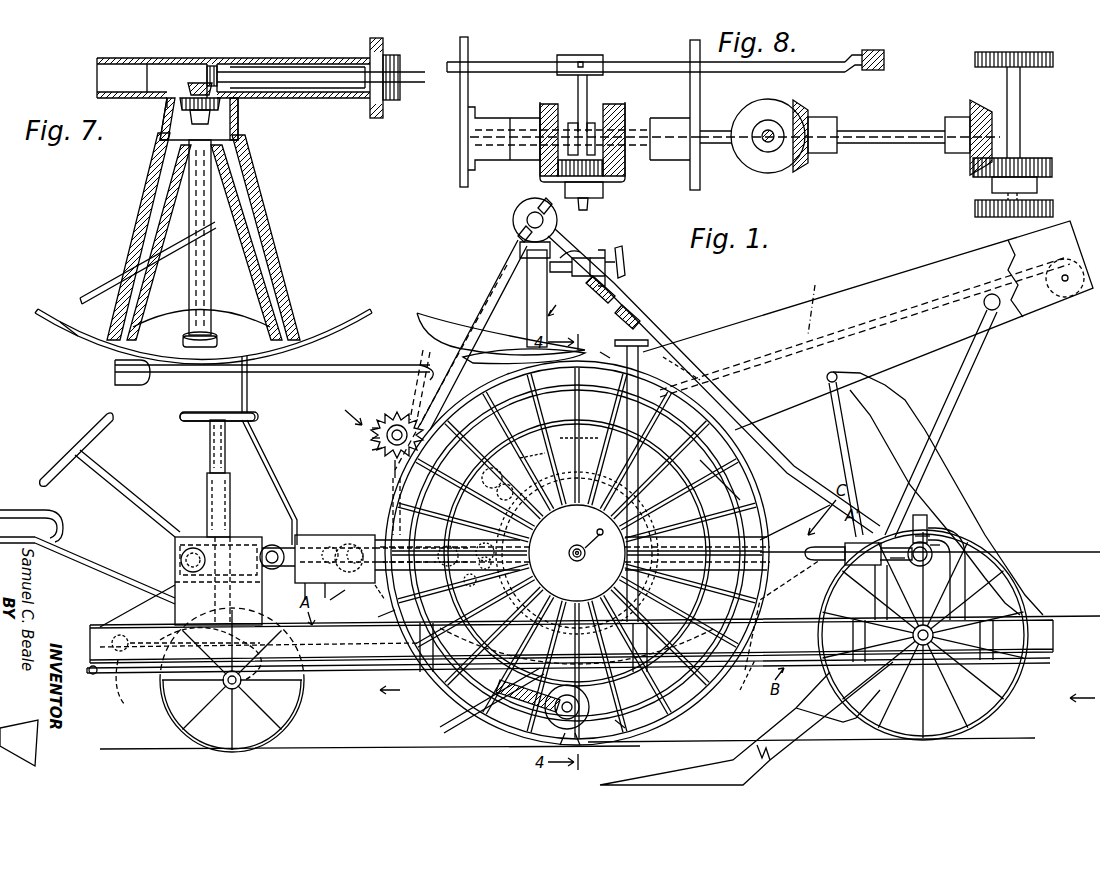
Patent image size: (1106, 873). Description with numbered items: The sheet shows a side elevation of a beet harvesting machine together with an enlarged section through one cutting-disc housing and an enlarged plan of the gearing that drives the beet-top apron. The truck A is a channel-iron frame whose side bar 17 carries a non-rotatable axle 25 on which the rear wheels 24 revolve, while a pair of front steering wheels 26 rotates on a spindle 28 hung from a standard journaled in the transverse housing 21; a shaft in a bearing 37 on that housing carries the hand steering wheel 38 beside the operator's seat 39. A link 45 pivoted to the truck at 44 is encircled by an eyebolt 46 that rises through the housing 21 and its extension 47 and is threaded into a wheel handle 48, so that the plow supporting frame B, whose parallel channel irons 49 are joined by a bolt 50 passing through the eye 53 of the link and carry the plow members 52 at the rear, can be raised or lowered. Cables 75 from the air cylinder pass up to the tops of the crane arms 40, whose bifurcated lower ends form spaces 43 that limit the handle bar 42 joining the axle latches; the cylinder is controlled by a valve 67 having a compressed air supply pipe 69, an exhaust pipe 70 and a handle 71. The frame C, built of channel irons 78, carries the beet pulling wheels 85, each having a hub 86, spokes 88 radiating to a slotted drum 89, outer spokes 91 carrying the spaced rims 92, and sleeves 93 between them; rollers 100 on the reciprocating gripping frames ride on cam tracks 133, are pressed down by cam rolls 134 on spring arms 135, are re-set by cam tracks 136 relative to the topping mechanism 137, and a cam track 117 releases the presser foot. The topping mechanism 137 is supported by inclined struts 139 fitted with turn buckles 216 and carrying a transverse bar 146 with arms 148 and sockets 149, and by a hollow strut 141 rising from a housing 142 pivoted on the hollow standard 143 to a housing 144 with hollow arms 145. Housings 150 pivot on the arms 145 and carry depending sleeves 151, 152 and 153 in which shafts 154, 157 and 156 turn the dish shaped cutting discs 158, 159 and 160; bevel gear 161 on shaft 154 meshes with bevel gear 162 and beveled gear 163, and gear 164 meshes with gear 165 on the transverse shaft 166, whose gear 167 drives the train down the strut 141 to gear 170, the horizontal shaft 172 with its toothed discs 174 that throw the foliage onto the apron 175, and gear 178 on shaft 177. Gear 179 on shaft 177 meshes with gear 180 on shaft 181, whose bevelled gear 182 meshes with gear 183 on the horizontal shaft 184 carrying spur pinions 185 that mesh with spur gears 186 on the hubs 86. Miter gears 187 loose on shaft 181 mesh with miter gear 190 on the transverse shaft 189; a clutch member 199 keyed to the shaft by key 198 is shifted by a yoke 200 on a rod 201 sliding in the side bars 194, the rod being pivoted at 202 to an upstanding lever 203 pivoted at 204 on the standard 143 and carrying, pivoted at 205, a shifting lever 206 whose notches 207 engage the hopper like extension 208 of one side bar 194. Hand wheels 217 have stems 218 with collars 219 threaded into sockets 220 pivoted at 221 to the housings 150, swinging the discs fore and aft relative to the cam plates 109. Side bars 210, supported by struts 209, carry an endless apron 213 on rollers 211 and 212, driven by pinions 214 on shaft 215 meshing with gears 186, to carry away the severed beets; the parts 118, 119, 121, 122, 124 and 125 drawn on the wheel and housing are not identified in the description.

In FIG. 7, the tube 148 is at (125, 49).
In FIG. 1, the tube 148 is at (517, 232).
In FIG. 7, the housing 150 is at (196, 58).
In FIG. 7, the sleeve 149 is at (290, 49).
In FIG. 7, the gear 165 is at (218, 66).
In FIG. 7, the shaft 145 is at (330, 84).
In FIG. 7, the bore 166 is at (312, 84).
In FIG. 7, the flange 144 is at (378, 118).
In FIG. 1, the flange 144 is at (513, 216).
In FIG. 7, the gear 167 is at (401, 73).
In FIG. 7, the bevel gear 164 is at (188, 86).
In FIG. 7, the gear 162 is at (222, 104).
In FIG. 7, the gear 163 is at (222, 118).
In FIG. 7, the head 161 is at (167, 104).
In FIG. 7, the leg 151 is at (135, 232).
In FIG. 1, the leg 151 is at (527, 306).
In FIG. 7, the rod 156 is at (192, 298).
In FIG. 7, the column 153 is at (207, 262).
In FIG. 1, the column 153 is at (487, 295).
In FIG. 7, the leg 152 is at (262, 230).
In FIG. 7, the leg 157 is at (278, 276).
In FIG. 7, the brace 154 is at (130, 272).
In FIG. 7, the base 159 is at (345, 322).
In FIG. 7, the base end 158 is at (72, 317).
In FIG. 1, the base end 158 is at (512, 350).
In FIG. 7, the dome 160 is at (160, 326).
In FIG. 1, the dome 160 is at (447, 340).
In FIG. 8, the rod 201 is at (636, 62).
In FIG. 8, the hook 203 is at (845, 62).
In FIG. 1, the hook 203 is at (482, 476).
In FIG. 8, the nut 202 is at (888, 51).
In FIG. 1, the nut 202 is at (385, 622).
In FIG. 8, the bearing plate 194 is at (460, 112).
In FIG. 1, the bearing plate 194 is at (272, 545).
In FIG. 8, the shaft 198 is at (540, 152).
In FIG. 8, the gear casing 187 is at (540, 104).
In FIG. 1, the gear casing 187 is at (318, 530).
In FIG. 8, the shifter 200 is at (589, 98).
In FIG. 8, the clutch 199 is at (592, 122).
In FIG. 8, the bracket 190 is at (603, 190).
In FIG. 1, the bracket 190 is at (322, 592).
In FIG. 8, the lug 189 is at (588, 205).
In FIG. 1, the lug 189 is at (305, 588).
In FIG. 8, the shaft 181 is at (722, 148).
In FIG. 1, the shaft 181 is at (340, 578).
In FIG. 8, the pulley 179 is at (772, 173).
In FIG. 1, the pulley 179 is at (348, 595).
In FIG. 8, the hub 177 is at (770, 132).
In FIG. 1, the hub 177 is at (392, 500).
In FIG. 8, the bevel gear 180 is at (810, 165).
In FIG. 1, the bevel gear 180 is at (386, 598).
In FIG. 8, the bevel gear 182 is at (978, 94).
In FIG. 1, the bevel gear 182 is at (450, 566).
In FIG. 8, the shaft 184 is at (1021, 130).
In FIG. 1, the shaft 184 is at (493, 550).
In FIG. 8, the bevel gear 183 is at (1035, 160).
In FIG. 8, the gear 185 is at (1053, 58).
In FIG. 1, the gear 185 is at (491, 562).
In FIG. 1, the frame 17 is at (340, 652).
In FIG. 1, the rail 53 is at (300, 634).
In FIG. 1, the post 69 is at (420, 648).
In FIG. 1, the wheel 26 is at (306, 712).
In FIG. 1, the hub 28 is at (222, 680).
In FIG. 1, the link 44 is at (115, 670).
In FIG. 1, the link 45 is at (200, 660).
In FIG. 1, the link 50 is at (210, 641).
In FIG. 1, the gear box 21 is at (168, 563).
In FIG. 1, the post 47 is at (230, 488).
In FIG. 1, the handle 48 is at (195, 422).
In FIG. 1, the lever 38 is at (86, 436).
In FIG. 1, the rod 37 is at (140, 486).
In FIG. 1, the handle 39 is at (8, 510).
In FIG. 1, the brace 46 is at (175, 604).
In FIG. 1, the rod 206 is at (330, 360).
In FIG. 1, the connection 205 is at (420, 365).
In FIG. 1, the rod 207 is at (262, 392).
In FIG. 1, the handle 208 is at (258, 416).
In FIG. 1, the sprocket 170 is at (397, 412).
In FIG. 1, the arrow 142 is at (350, 420).
In FIG. 1, the tooth 174 is at (372, 430).
In FIG. 1, the tooth 172 is at (372, 440).
In FIG. 1, the tooth 178 is at (372, 452).
In FIG. 1, the shaft 143 is at (392, 478).
In FIG. 1, the gear 175 is at (345, 543).
In FIG. 1, the axle housing 118 is at (560, 578).
In FIG. 1, the gear 121 is at (470, 587).
In FIG. 1, the wheel rim 100 is at (478, 392).
In FIG. 1, the ring 186 is at (688, 503).
In FIG. 1, the spokes 117 is at (480, 524).
In FIG. 1, the ring 89 is at (676, 578).
In FIG. 1, the hub disc 119 is at (563, 505).
In FIG. 1, the axle 124 is at (586, 552).
In FIG. 1, the pin 86 is at (597, 531).
In FIG. 1, the ring gear 88 is at (577, 553).
In FIG. 1, the gear 204 is at (497, 492).
In FIG. 1, the shaft 214 is at (587, 436).
In FIG. 1, the gear 215 is at (540, 452).
In FIG. 1, the arc 122 is at (686, 640).
In FIG. 1, the post 125 is at (620, 341).
In FIG. 1, the pin 211 is at (604, 352).
In FIG. 1, the coupling 219 is at (575, 240).
In FIG. 1, the leg 221 is at (512, 248).
In FIG. 1, the coupling 220 is at (558, 274).
In FIG. 1, the coupling 218 is at (599, 262).
In FIG. 1, the lever 217 is at (622, 248).
In FIG. 1, the bar 139 is at (660, 330).
In FIG. 1, the joint 216 is at (626, 306).
In FIG. 1, the joint 146 is at (612, 312).
In FIG. 1, the arrow 137 is at (568, 300).
In FIG. 1, the bar 136 is at (667, 373).
In FIG. 1, the rod 141 is at (438, 348).
In FIG. 1, the boom 210 is at (878, 286).
In FIG. 1, the rod 213 is at (865, 327).
In FIG. 1, the pulley 212 is at (1065, 296).
In FIG. 1, the hood 75 is at (855, 480).
In FIG. 1, the lever 209 is at (955, 385).
In FIG. 1, the tie rod 71 is at (806, 553).
In FIG. 1, the block 78 is at (785, 540).
In FIG. 1, the ring 67 is at (928, 530).
In FIG. 1, the elbow 70 is at (966, 596).
In FIG. 1, the bar 109 is at (795, 514).
In FIG. 1, the link 93 is at (611, 748).
In FIG. 1, the bar 85 is at (777, 462).
In FIG. 1, the lever 42 is at (918, 535).
In FIG. 1, the lever 43 is at (932, 545).
In FIG. 1, the rod 40 is at (905, 560).
In FIG. 1, the wheel 24 is at (1018, 690).
In FIG. 1, the hub 25 is at (948, 660).
In FIG. 1, the roller 135 is at (540, 722).
In FIG. 1, the lever 133 is at (430, 696).
In FIG. 1, the bracket 134 is at (528, 727).
In FIG. 1, the link 91 is at (510, 733).
In FIG. 1, the link 92 is at (630, 726).
In FIG. 1, the link 49 is at (749, 678).
In FIG. 1, the pole 52 is at (695, 772).